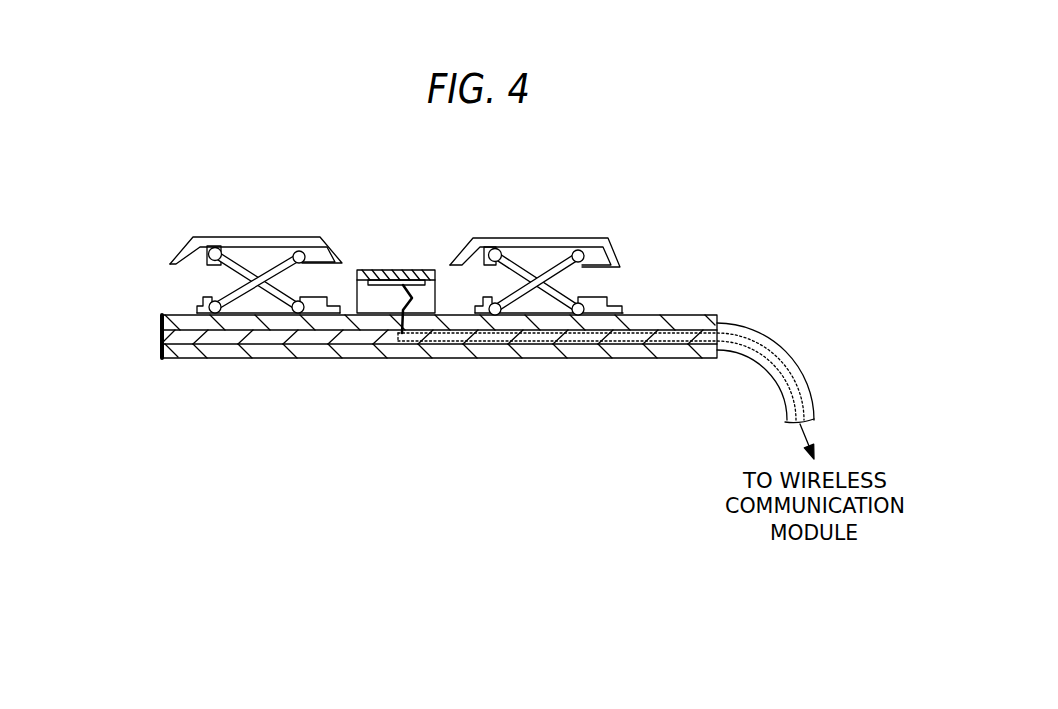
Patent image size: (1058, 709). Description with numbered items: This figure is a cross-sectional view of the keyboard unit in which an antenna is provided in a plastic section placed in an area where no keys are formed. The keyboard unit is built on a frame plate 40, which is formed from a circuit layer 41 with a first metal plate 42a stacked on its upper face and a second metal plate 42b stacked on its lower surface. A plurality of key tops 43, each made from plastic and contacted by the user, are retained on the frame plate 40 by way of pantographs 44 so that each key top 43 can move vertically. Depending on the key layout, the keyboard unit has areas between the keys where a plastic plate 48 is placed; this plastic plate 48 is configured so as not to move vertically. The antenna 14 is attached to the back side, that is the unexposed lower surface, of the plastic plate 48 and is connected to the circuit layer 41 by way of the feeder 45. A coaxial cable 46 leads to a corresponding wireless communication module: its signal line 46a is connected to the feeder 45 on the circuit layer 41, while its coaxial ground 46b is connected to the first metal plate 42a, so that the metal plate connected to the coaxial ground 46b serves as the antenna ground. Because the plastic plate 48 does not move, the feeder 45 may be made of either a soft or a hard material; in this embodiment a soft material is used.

The frame plate 40 is at (82, 302).
The circuit layer 41 is at (161, 337).
The first metal plate 42a is at (161, 317).
The second metal plate 42b is at (161, 355).
The key top 43 is at (225, 242).
The pantograph 44 is at (240, 275).
The feeder 45 is at (417, 270).
The plastic plate 48 is at (365, 270).
The antenna 14 is at (395, 272).
The coaxial cable 46 is at (780, 347).
The signal line 46a is at (753, 347).
The coaxial ground 46b is at (780, 394).